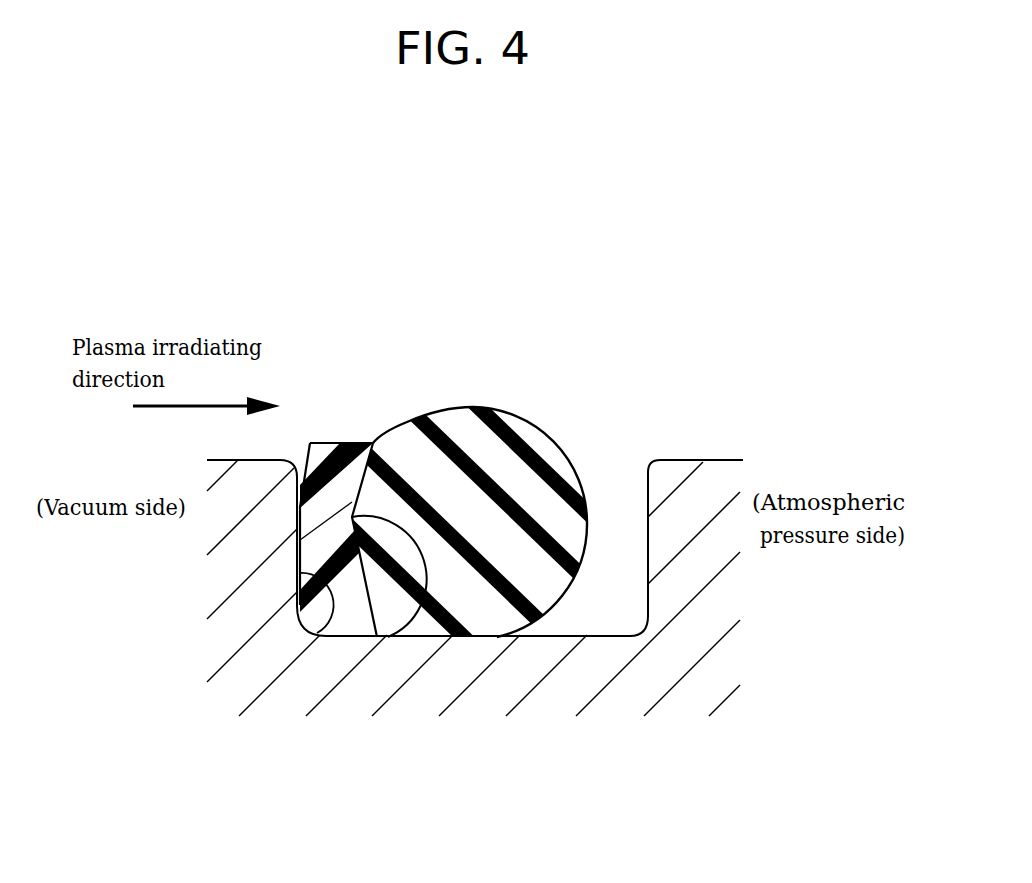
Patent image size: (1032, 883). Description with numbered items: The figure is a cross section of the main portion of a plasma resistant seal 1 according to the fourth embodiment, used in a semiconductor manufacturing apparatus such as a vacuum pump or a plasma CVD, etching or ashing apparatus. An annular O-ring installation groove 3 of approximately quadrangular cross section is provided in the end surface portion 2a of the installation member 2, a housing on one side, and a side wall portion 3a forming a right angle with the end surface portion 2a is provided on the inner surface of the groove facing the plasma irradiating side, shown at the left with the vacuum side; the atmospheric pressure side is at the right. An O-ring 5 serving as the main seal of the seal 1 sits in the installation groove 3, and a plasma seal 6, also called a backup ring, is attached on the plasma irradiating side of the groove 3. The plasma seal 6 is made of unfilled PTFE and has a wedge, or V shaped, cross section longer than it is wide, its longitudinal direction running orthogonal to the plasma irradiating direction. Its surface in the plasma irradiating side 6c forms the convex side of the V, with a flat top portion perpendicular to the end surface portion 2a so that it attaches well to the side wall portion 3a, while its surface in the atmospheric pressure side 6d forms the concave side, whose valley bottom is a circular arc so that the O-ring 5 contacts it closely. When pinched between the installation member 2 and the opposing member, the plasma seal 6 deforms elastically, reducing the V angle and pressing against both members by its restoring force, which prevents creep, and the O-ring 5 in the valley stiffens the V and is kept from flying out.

The plasma resistant seal 1 is at (578, 400).
The installation member 2 is at (682, 648).
The end surface portion 2a is at (693, 459).
The O-ring installation groove 3 is at (578, 605).
The side wall portion 3a is at (328, 638).
The O-ring 5 is at (462, 432).
The plasma seal 6 is at (336, 441).
The surface in a plasma irradiating side 6c is at (297, 525).
The surface in an atmospheric pressure side 6d is at (410, 600).